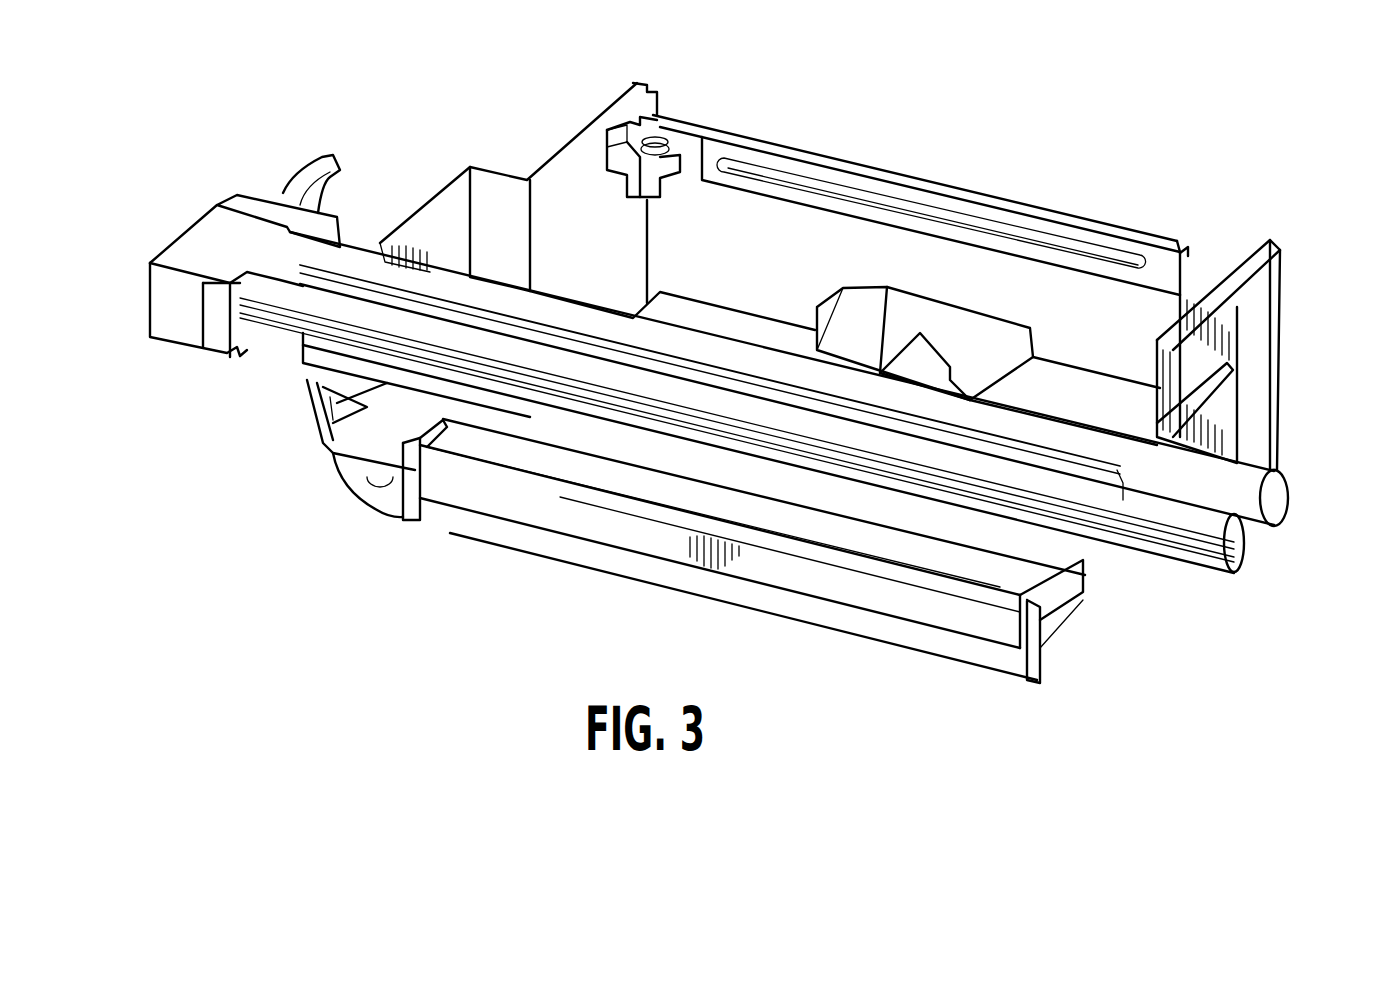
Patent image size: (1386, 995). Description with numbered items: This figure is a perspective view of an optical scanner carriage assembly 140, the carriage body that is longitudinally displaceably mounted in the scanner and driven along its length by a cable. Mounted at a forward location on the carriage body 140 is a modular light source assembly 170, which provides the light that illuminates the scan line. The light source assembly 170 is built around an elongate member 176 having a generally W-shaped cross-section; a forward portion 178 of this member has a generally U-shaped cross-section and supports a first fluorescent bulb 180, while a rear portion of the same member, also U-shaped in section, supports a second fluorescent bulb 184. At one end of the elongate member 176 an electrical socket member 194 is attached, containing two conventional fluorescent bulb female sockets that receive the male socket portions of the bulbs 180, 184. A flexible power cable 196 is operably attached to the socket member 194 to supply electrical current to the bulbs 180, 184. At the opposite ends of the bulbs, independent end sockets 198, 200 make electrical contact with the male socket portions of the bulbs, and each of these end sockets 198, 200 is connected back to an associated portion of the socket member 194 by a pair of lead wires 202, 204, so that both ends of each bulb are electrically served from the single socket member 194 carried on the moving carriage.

The scanner carriage assembly 140 is at (998, 143).
The modular light source assembly 170 is at (210, 207).
The elongate member 176 is at (337, 370).
The forward portion 178 is at (385, 390).
The first fluorescent bulb 180 is at (550, 380).
The second fluorescent bulb 184 is at (330, 263).
The electrical socket member 194 is at (200, 260).
The flexible power cable 196 is at (303, 167).
The end socket 198 is at (1208, 557).
The end socket 200 is at (1277, 510).
The lead wire 202 is at (1150, 550).
The lead wire 204 is at (1150, 551).